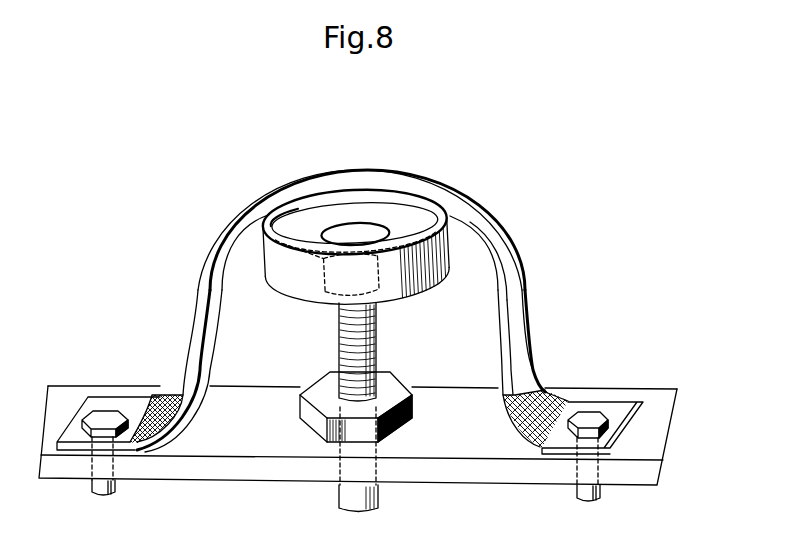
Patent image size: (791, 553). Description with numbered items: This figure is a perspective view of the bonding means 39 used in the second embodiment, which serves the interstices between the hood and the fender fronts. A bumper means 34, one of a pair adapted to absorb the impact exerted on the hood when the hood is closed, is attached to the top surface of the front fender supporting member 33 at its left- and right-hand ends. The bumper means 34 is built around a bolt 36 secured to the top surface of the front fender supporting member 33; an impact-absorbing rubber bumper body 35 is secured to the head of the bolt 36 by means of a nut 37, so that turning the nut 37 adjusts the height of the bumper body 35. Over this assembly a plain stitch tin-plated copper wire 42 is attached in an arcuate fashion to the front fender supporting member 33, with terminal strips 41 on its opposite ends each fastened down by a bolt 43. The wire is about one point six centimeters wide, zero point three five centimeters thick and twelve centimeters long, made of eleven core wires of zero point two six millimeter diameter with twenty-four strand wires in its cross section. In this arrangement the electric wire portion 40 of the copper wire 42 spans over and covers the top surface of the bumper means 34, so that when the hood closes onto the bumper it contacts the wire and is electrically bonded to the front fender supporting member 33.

The front fender supporting member 33 is at (247, 450).
The bumper means 34 is at (303, 290).
The impact-absorbing rubber bumper body 35 is at (448, 248).
The bolt 36 is at (377, 336).
The nut 37 is at (404, 413).
The bonding means 39 is at (521, 193).
The electric wire portion 40 is at (202, 293).
The terminal strips 41 is at (138, 405).
The plain stitch tin-plated copper wire 42 is at (380, 170).
The bolt 43 is at (102, 415).